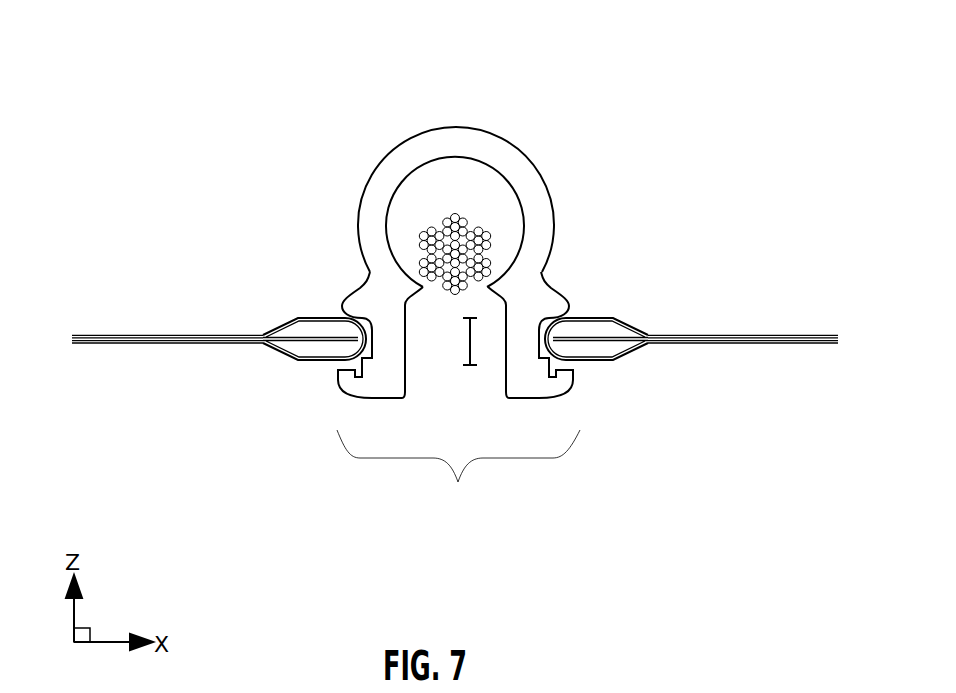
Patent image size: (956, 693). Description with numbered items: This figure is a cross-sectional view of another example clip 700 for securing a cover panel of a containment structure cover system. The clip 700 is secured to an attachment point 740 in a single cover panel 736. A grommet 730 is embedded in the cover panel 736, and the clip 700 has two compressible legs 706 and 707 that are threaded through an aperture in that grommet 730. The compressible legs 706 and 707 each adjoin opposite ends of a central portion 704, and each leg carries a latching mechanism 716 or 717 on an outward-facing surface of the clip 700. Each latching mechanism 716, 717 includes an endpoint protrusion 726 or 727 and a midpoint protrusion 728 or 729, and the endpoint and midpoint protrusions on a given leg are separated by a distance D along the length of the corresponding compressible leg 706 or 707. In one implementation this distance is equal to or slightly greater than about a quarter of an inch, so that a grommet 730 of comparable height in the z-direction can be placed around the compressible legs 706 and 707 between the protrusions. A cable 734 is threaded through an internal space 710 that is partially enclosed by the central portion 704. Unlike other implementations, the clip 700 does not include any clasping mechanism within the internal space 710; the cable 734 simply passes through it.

The clip 700 is at (248, 75).
The central portion 704 is at (432, 143).
The internal space 710 is at (478, 188).
The cable 734 is at (423, 247).
The midpoint protrusion 728 is at (362, 297).
The midpoint protrusion 729 is at (553, 298).
The endpoint protrusion 726 is at (353, 380).
The endpoint protrusion 727 is at (553, 385).
The compressible leg 706 is at (387, 353).
The compressible leg 707 is at (523, 353).
The grommet 730 is at (323, 323).
The latching mechanism 717 is at (261, 312).
The cover panel 736 is at (150, 345).
The latching mechanism 716 is at (618, 303).
The attachment point 740 is at (458, 482).